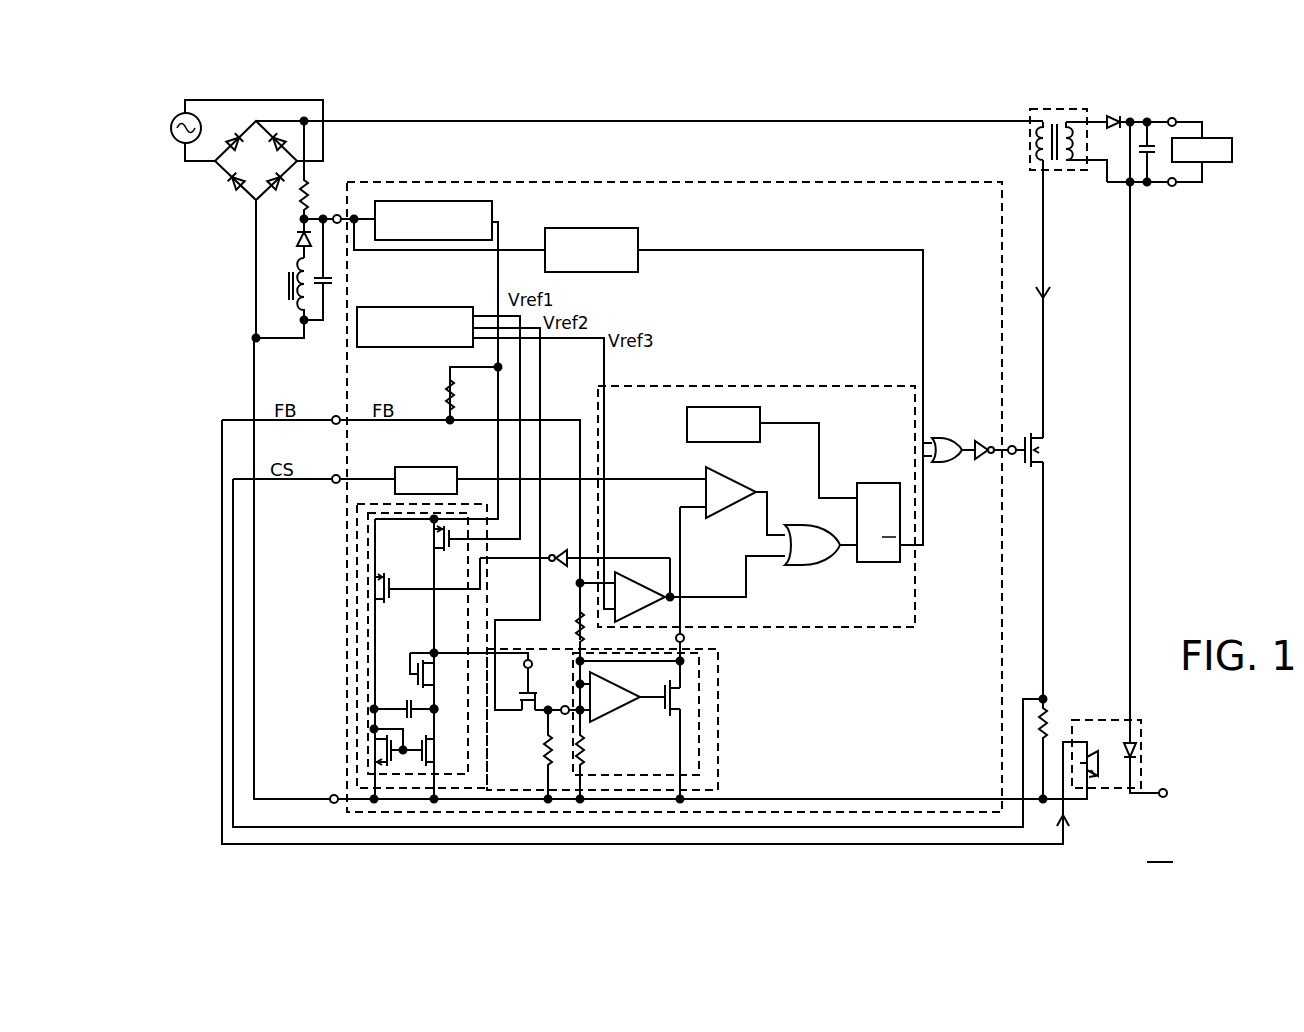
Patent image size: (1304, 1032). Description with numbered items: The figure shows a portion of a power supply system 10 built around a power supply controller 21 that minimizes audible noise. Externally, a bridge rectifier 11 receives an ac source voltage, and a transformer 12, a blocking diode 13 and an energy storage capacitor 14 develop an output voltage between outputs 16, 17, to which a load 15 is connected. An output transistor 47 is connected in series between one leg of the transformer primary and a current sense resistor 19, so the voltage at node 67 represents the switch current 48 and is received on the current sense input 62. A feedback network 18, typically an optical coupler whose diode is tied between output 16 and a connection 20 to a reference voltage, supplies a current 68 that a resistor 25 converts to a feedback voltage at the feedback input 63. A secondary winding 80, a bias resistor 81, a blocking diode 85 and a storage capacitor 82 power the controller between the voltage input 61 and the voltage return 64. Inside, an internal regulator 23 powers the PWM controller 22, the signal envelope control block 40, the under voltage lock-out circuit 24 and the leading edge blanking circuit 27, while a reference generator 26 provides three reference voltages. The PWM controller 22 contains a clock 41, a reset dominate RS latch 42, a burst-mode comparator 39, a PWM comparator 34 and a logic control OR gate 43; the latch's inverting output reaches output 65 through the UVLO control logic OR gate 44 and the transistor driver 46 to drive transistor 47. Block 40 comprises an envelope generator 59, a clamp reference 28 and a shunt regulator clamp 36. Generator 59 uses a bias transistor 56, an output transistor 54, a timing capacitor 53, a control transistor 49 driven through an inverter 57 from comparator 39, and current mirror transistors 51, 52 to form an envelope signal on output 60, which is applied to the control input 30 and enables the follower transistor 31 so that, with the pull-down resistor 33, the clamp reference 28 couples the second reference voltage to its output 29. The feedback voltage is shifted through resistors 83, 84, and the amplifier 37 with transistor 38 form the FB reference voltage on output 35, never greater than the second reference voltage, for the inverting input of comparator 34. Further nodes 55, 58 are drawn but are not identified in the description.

The power supply system 10 is at (1160, 851).
The bridge rectifier 11 is at (235, 183).
The transformer 12 is at (1067, 172).
The blocking diode 13 is at (1113, 116).
The energy storage capacitor 14 is at (1147, 140).
The load 15 is at (1220, 163).
The output 16 is at (1177, 118).
The output 17 is at (1177, 188).
The feedback network 18 is at (1108, 720).
The current sense resistor 19 is at (1046, 718).
The connection 20 is at (1165, 788).
The power supply controller 21 is at (703, 181).
The PWM controller 22 is at (765, 386).
The internal regulator 23 is at (437, 201).
The under voltage lock-out circuit 24 is at (606, 228).
The resistor 25 is at (447, 399).
The reference generator 26 is at (432, 307).
The leading edge blanking circuit 27 is at (432, 467).
The clamp reference 28 is at (510, 791).
The output 29 is at (568, 716).
The control input 30 is at (531, 660).
The follower transistor 31 is at (524, 706).
The pull-down resistor 33 is at (545, 756).
The PWM comparator 34 is at (748, 483).
The output 35 is at (686, 639).
The shunt regulator clamp 36 is at (718, 745).
The amplifier 37 is at (612, 713).
The transistor 38 is at (674, 692).
The burst-mode comparator 39 is at (645, 570).
The signal envelope control block 40 is at (700, 690).
The clock generator 41 is at (687, 428).
The reset dominate RS latch 42 is at (868, 563).
The logic control OR gate 43 is at (803, 566).
The UVLO control logic OR gate 44 is at (945, 437).
The transistor driver 46 is at (980, 460).
The output transistor 47 is at (1040, 447).
The switch current 48 is at (1053, 293).
The control transistor 49 is at (375, 588).
The current mirror transistor 51 is at (378, 750).
The current mirror transistor 52 is at (432, 748).
The timing capacitor 53 is at (408, 700).
The output transistor 54 is at (418, 661).
The node 55 is at (567, 706).
The bias transistor 56 is at (440, 533).
The inverter 57 is at (561, 550).
The node 58 is at (437, 709).
The envelope generator 59 is at (366, 690).
The output 60 is at (436, 650).
The voltage input 61 is at (338, 212).
The current sense input 62 is at (336, 474).
The feedback input 63 is at (336, 415).
The voltage return 64 is at (333, 795).
The output 65 is at (1012, 446).
The node 67 is at (1041, 699).
The current 68 is at (1070, 822).
The secondary winding 80 is at (292, 272).
The bias resistor 81 is at (307, 202).
The storage capacitor 82 is at (331, 292).
The resistor 83 is at (577, 612).
The resistor 84 is at (584, 756).
The blocking diode 85 is at (297, 236).